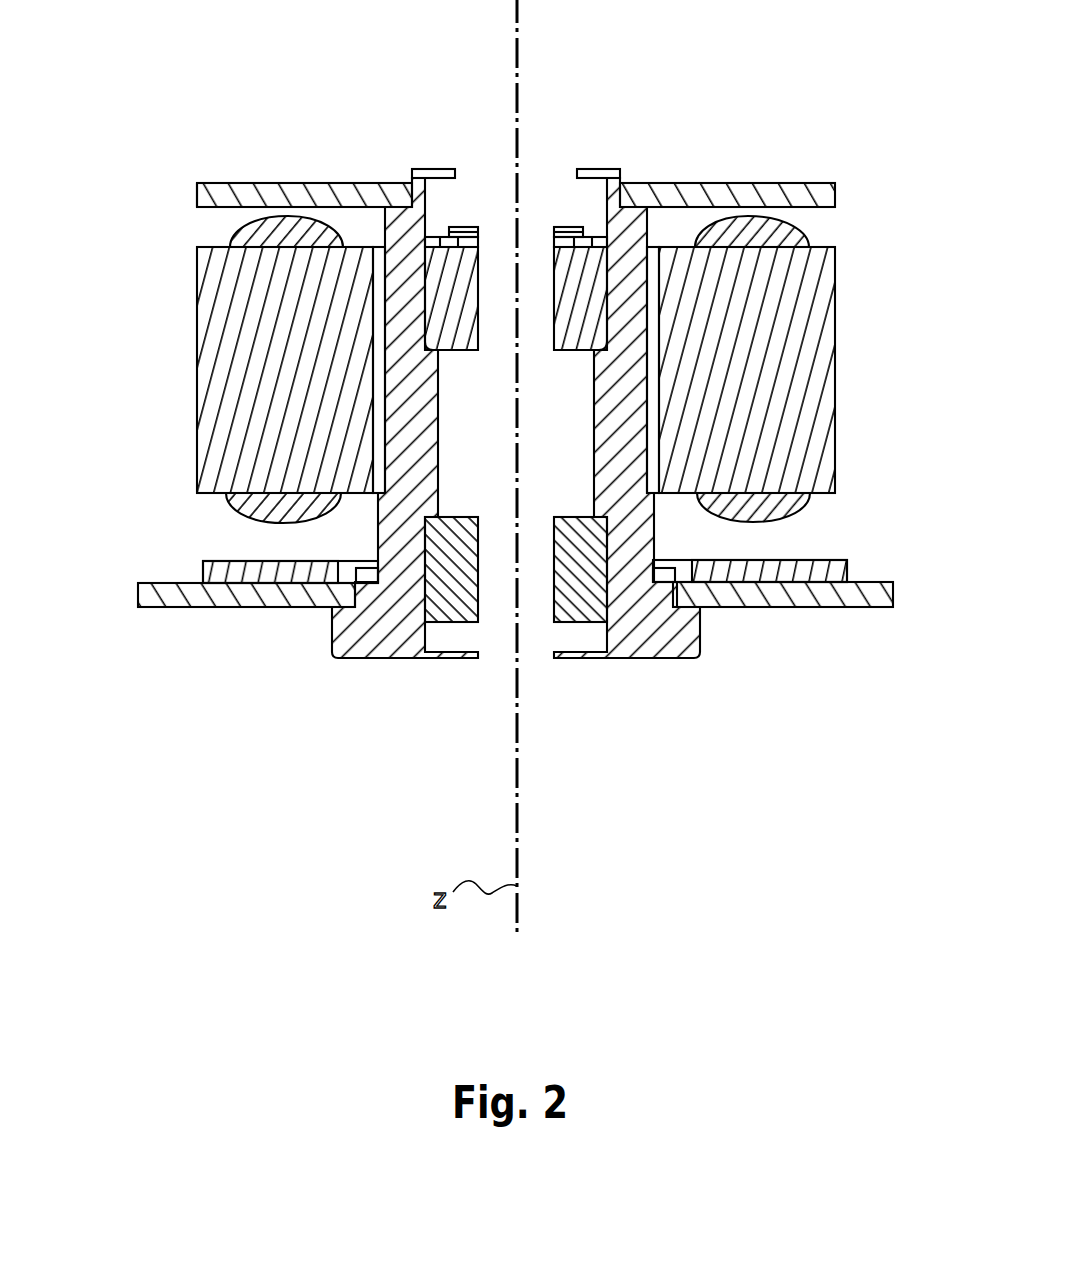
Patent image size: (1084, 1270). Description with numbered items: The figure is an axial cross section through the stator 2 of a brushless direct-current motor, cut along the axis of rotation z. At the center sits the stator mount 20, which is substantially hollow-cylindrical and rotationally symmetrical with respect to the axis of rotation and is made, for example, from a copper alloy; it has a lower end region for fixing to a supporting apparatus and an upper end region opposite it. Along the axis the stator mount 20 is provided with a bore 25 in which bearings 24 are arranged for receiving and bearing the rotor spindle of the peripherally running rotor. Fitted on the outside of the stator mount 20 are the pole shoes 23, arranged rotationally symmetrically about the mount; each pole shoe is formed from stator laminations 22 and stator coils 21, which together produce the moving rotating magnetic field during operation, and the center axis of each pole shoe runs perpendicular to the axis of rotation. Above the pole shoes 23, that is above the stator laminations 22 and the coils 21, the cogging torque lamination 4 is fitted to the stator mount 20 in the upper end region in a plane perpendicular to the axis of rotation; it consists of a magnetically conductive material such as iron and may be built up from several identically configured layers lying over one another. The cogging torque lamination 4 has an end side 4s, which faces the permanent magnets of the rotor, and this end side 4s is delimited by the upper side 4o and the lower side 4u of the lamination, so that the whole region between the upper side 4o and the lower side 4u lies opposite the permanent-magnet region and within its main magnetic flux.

The stator 2 is at (243, 675).
The cogging torque lamination 4 is at (303, 188).
The upper side 4o is at (333, 180).
The end side 4s is at (193, 195).
The lower side 4u is at (231, 235).
The stator mount 20 is at (381, 636).
The stator coils 21 is at (247, 500).
The stator laminations 22 is at (212, 373).
The pole shoes 23 is at (843, 370).
The bearings 24 is at (463, 320).
The bore 25 is at (535, 250).